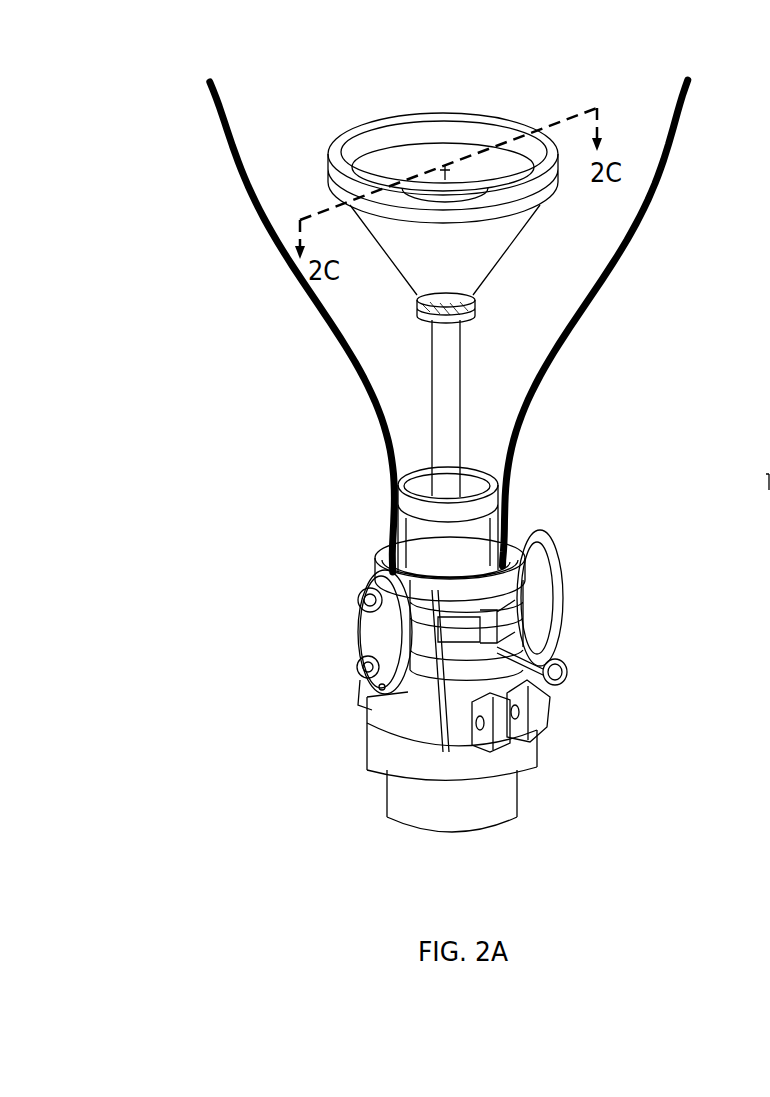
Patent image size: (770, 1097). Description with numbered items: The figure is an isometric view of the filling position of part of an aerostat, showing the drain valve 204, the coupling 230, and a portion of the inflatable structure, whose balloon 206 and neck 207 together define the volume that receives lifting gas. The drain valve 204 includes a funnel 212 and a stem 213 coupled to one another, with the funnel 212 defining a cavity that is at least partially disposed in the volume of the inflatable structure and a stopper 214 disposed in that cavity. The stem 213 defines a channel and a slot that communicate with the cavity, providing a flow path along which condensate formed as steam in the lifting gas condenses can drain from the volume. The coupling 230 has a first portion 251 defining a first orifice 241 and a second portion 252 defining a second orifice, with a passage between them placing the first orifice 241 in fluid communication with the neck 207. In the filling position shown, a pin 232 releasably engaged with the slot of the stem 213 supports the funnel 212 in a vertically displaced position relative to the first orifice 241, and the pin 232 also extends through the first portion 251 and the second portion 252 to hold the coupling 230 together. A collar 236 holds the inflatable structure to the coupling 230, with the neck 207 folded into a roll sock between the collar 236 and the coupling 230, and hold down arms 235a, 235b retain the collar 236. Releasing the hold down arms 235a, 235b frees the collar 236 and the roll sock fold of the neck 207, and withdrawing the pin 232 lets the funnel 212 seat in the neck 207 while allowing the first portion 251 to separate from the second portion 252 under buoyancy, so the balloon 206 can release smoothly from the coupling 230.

The drain valve 204 is at (358, 92).
The balloon 206 is at (645, 229).
The neck 207 is at (395, 478).
The funnel 212 is at (518, 114).
The stem 213 is at (448, 360).
The stopper 214 is at (455, 177).
The coupling 230 is at (320, 576).
The pin 232 is at (545, 650).
The hold down arm 235a is at (388, 642).
The hold down arm 235b is at (552, 583).
The collar 236 is at (377, 563).
The first orifice 241 is at (425, 488).
The first portion 251 is at (487, 528).
The second portion 252 is at (390, 718).